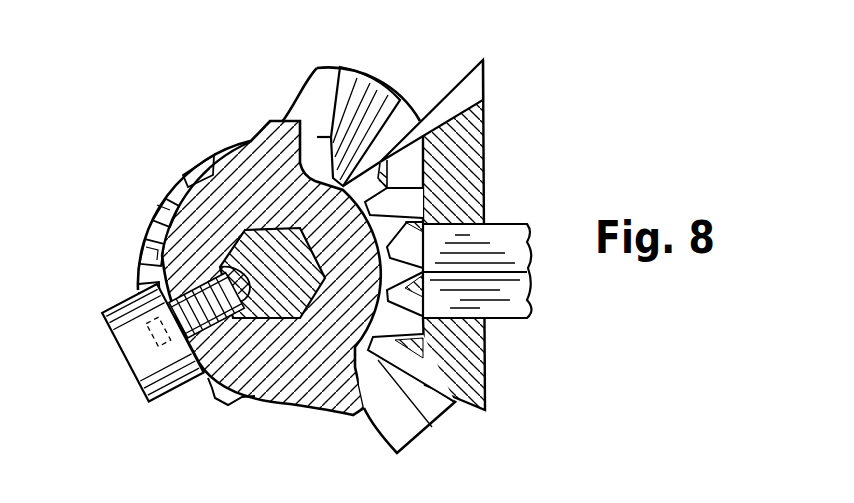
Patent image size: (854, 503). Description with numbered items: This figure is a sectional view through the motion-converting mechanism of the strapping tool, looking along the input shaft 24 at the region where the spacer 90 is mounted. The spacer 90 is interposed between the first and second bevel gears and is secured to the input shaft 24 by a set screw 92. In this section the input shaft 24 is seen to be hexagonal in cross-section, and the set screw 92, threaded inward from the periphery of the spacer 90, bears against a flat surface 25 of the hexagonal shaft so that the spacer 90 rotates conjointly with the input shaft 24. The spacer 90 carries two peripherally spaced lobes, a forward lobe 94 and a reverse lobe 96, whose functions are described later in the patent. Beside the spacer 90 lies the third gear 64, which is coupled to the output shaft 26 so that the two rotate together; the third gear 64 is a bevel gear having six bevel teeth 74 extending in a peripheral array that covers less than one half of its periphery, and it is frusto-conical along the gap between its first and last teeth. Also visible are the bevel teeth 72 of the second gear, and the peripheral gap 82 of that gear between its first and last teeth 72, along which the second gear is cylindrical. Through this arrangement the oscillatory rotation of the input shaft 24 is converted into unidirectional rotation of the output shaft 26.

The input shaft 24 is at (250, 228).
The flat surface 25 is at (220, 267).
The output shaft 26 is at (512, 232).
The third gear 64 is at (480, 125).
The bevel teeth 72 is at (356, 102).
The bevel teeth 74 is at (467, 85).
The peripheral gap 82 is at (183, 175).
The spacer 90 is at (263, 370).
The set screw 92 is at (113, 336).
The forward lobe 94 is at (347, 387).
The reverse lobe 96 is at (280, 128).